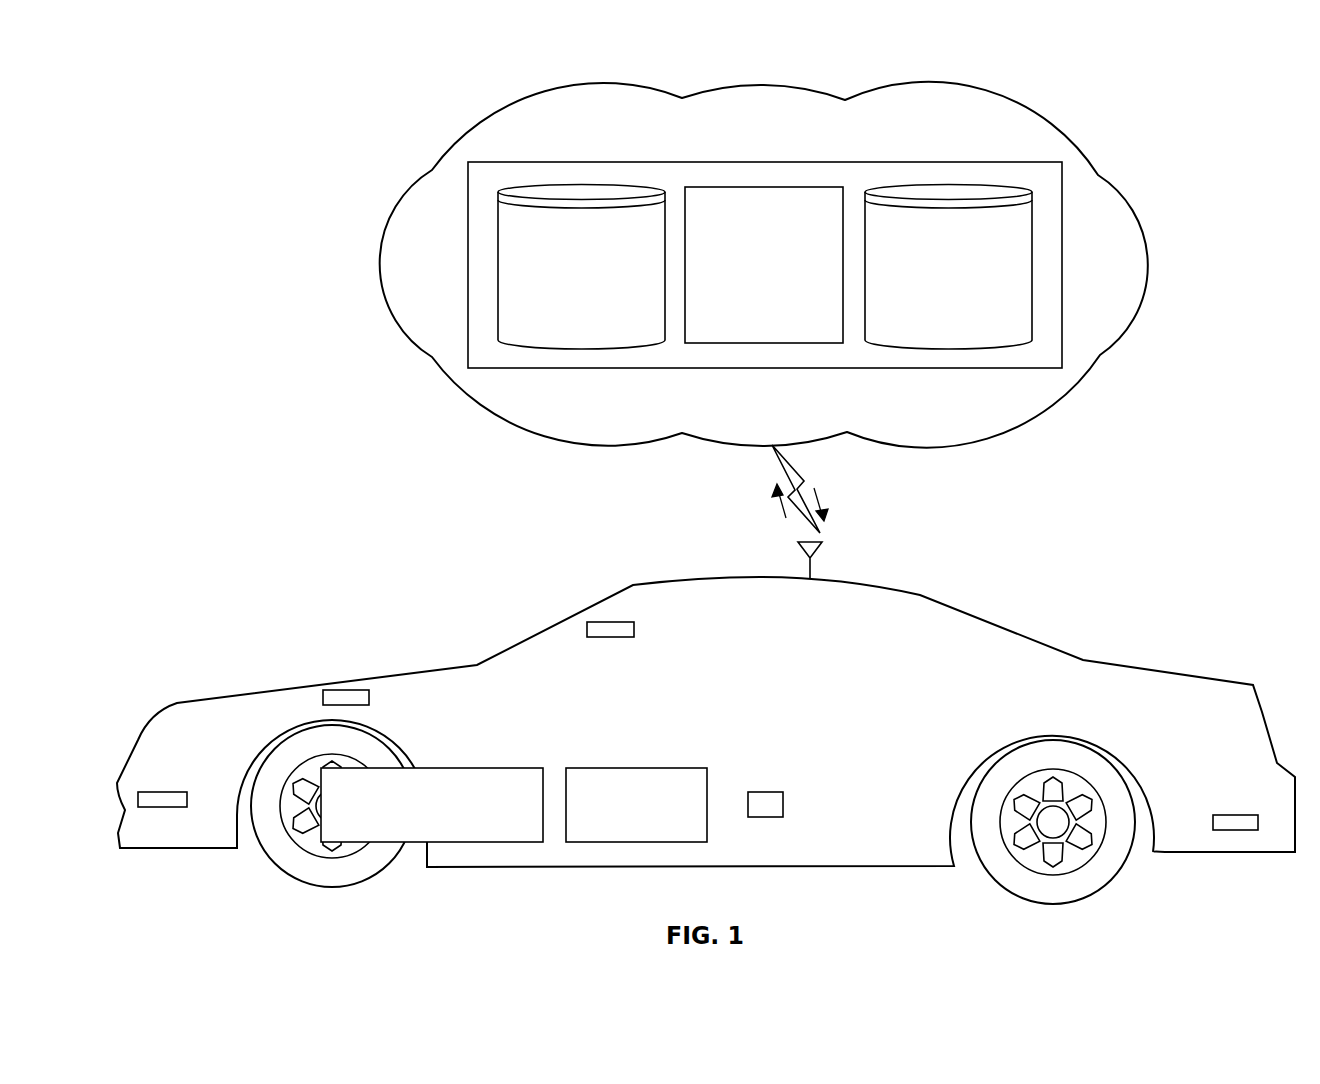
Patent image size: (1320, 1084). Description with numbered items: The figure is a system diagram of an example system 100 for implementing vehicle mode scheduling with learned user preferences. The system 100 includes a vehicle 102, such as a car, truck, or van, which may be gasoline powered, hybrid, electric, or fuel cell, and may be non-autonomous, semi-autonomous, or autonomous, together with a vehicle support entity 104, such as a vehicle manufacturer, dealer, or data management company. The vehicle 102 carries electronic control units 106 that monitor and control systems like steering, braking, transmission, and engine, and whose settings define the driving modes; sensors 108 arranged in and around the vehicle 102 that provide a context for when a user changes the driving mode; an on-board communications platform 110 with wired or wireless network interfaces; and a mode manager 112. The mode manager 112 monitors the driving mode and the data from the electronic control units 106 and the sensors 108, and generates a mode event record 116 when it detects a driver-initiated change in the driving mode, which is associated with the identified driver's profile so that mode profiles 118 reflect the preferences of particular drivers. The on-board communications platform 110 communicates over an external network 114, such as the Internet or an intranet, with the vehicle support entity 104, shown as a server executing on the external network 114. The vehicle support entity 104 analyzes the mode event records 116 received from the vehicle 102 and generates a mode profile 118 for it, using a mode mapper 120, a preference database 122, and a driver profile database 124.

The system 100 is at (1203, 116).
The vehicle 102 is at (1253, 685).
The vehicle support entity 104 is at (990, 162).
The electronic control units 106 is at (338, 690).
The sensors 108 is at (604, 622).
The on-board communications platform 110 is at (482, 768).
The mode manager 112 is at (645, 768).
The external network 114 is at (1222, 330).
The mode event record 116 is at (745, 508).
The mode profile 118 is at (850, 494).
The mode mapper 120 is at (805, 187).
The preference database 122 is at (583, 350).
The driver profile database 124 is at (952, 350).